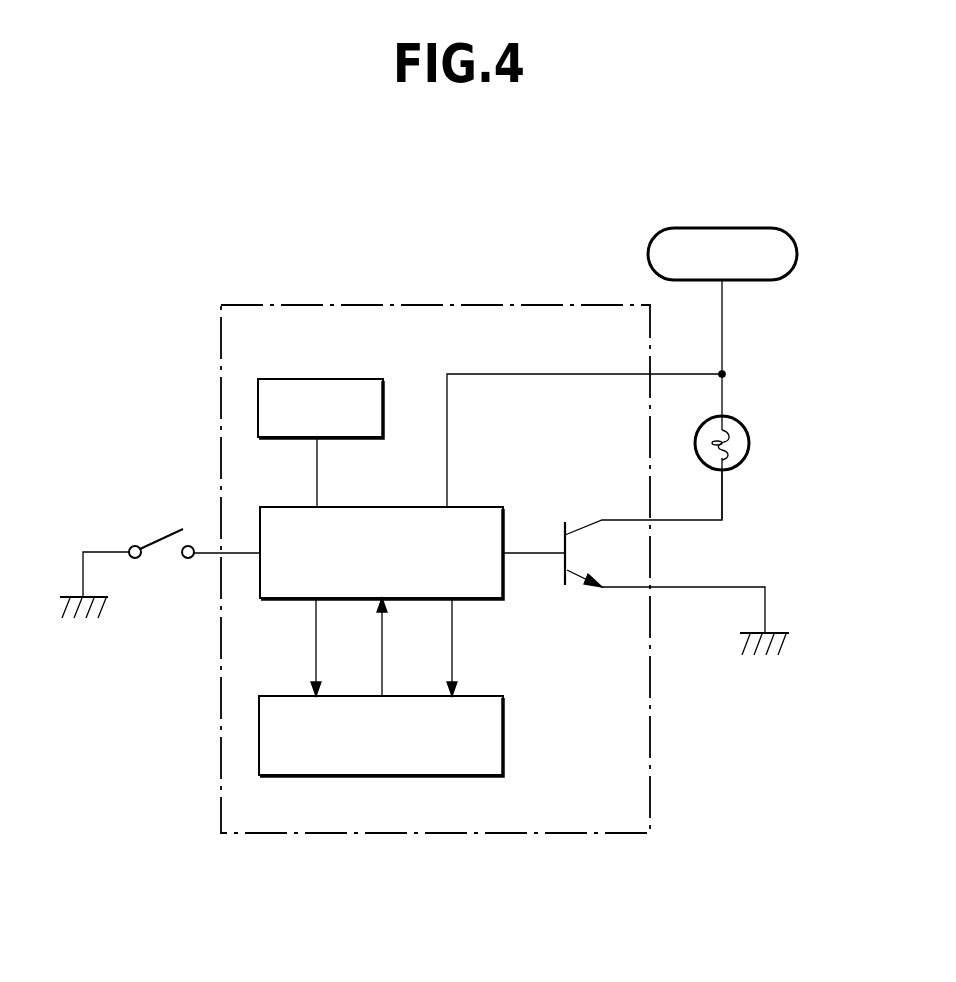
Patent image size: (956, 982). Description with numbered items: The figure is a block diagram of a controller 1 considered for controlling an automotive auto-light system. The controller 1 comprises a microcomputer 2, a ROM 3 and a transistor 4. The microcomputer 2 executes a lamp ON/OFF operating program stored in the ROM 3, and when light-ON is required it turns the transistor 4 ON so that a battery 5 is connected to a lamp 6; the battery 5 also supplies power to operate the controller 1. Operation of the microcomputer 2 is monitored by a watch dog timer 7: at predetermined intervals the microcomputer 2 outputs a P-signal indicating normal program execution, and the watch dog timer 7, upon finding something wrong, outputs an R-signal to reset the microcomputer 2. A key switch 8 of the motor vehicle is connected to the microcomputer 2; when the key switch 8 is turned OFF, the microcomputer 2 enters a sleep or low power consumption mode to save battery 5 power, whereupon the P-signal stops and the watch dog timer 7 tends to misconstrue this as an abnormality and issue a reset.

The controller 1 is at (408, 305).
The microcomputer 2 is at (505, 590).
The ROM 3 is at (316, 379).
The transistor 4 is at (582, 520).
The battery 5 is at (765, 228).
The lamp 6 is at (747, 432).
The watch dog timer 7 is at (503, 735).
The key switch 8 is at (160, 530).